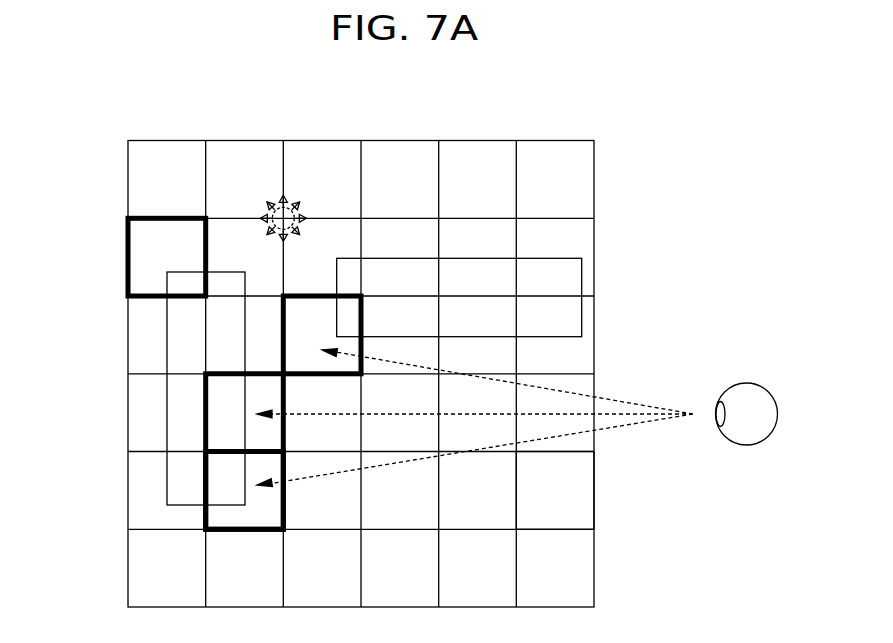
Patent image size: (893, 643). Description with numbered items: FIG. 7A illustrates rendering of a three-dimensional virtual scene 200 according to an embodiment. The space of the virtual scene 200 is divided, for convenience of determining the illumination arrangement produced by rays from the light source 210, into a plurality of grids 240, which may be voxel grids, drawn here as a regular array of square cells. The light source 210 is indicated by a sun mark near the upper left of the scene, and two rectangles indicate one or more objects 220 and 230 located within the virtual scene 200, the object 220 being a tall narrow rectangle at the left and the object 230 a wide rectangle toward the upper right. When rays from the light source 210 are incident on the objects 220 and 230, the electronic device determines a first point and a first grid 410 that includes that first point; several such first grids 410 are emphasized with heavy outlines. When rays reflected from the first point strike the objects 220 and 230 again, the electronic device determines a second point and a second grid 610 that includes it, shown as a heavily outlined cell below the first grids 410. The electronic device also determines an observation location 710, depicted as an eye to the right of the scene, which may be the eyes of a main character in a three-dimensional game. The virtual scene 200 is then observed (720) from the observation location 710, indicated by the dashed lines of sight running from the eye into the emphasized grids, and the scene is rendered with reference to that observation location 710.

The 3D virtual scene 200 is at (557, 139).
The light source 210 is at (275, 198).
The object 220 is at (167, 334).
The object 230 is at (582, 282).
The grid 240 is at (585, 492).
The first grid 410 is at (128, 257).
The second grid 610 is at (283, 492).
The observation location 710 is at (746, 383).
The observation of the 3D virtual scene 720 is at (626, 400).